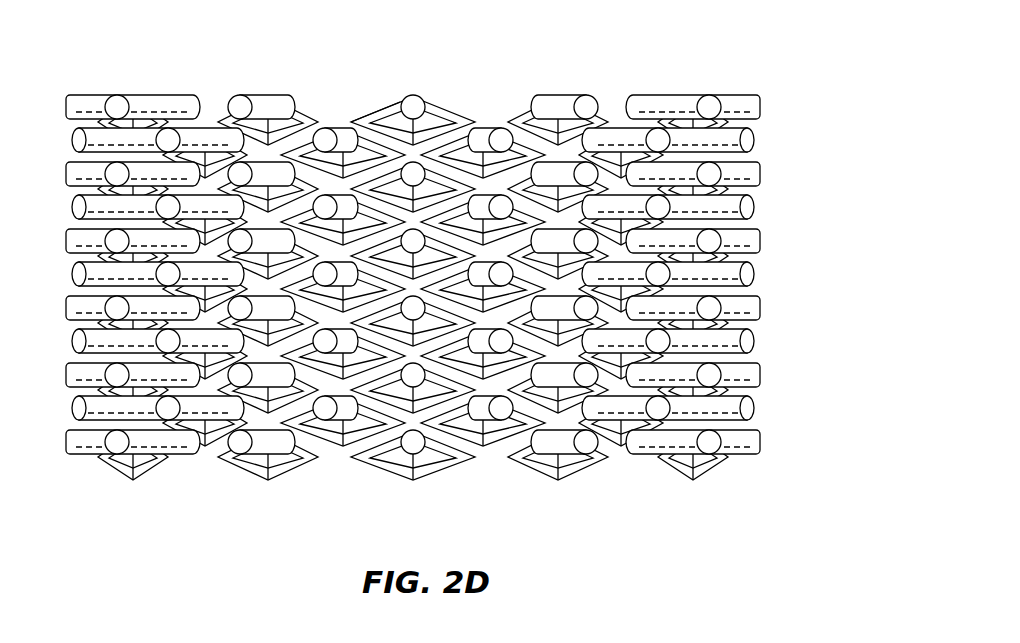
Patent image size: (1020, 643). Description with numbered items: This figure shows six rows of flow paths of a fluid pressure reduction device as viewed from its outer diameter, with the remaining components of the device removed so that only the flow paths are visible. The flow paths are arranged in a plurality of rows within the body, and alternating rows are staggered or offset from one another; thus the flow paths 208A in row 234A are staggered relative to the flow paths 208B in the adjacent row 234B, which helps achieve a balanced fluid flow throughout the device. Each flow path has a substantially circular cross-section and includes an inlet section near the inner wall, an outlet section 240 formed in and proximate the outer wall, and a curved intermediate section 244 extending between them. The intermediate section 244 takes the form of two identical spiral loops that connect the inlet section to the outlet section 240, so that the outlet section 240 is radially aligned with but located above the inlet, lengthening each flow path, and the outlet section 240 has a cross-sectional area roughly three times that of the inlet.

The flow paths 208A is at (429, 79).
The flow paths 208B is at (485, 106).
The outlet section 240 is at (411, 104).
The curved intermediate section 244 is at (358, 119).
The row 234A is at (784, 107).
The row 234B is at (784, 138).